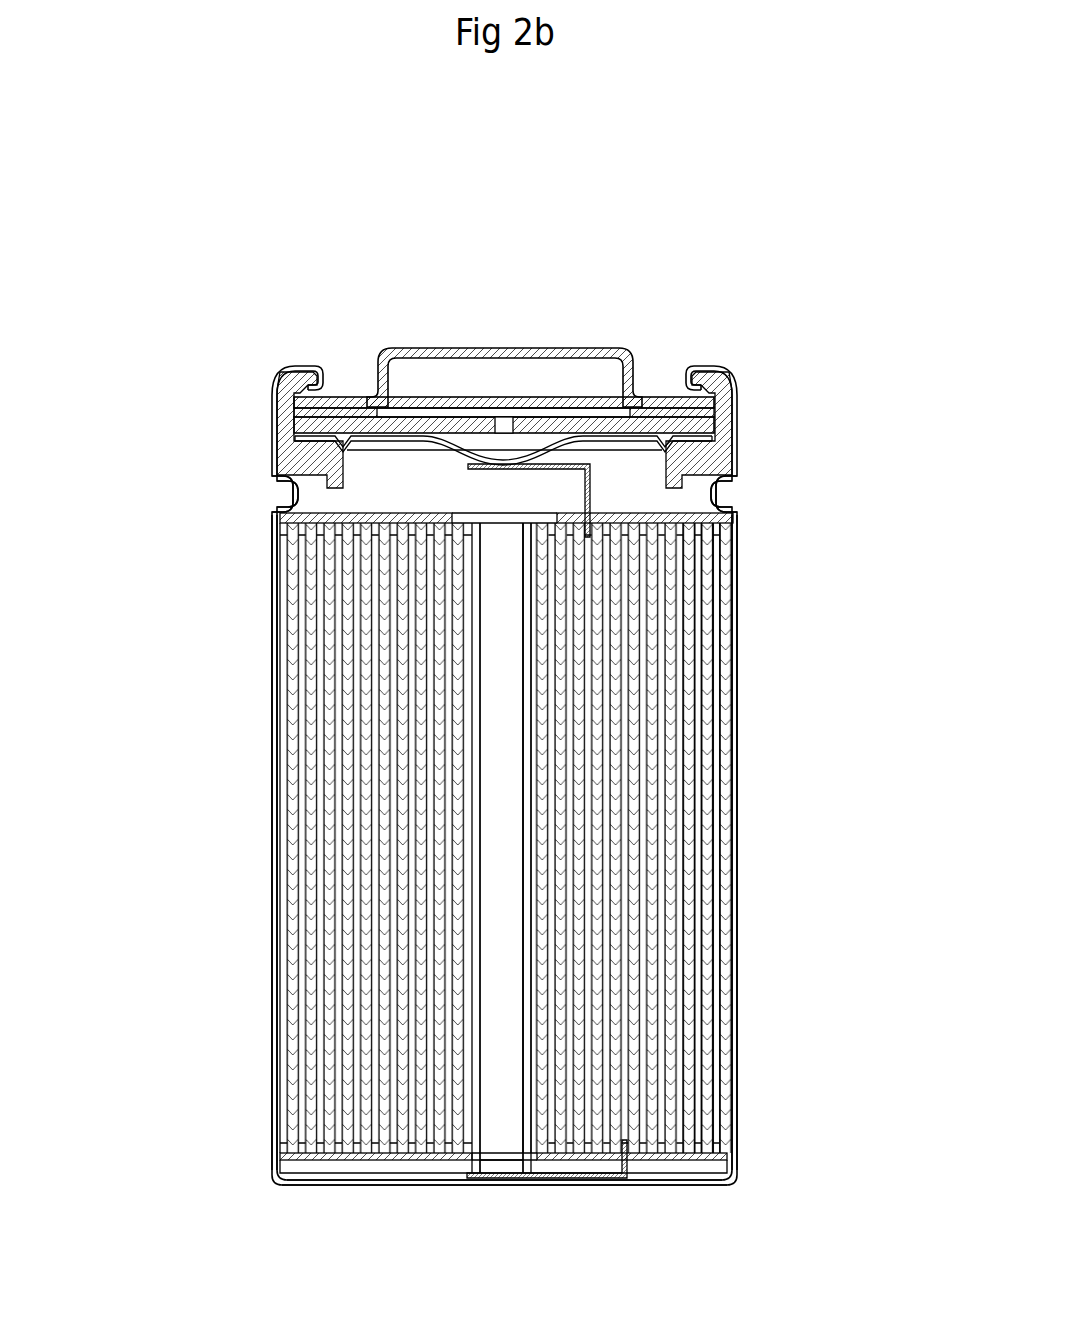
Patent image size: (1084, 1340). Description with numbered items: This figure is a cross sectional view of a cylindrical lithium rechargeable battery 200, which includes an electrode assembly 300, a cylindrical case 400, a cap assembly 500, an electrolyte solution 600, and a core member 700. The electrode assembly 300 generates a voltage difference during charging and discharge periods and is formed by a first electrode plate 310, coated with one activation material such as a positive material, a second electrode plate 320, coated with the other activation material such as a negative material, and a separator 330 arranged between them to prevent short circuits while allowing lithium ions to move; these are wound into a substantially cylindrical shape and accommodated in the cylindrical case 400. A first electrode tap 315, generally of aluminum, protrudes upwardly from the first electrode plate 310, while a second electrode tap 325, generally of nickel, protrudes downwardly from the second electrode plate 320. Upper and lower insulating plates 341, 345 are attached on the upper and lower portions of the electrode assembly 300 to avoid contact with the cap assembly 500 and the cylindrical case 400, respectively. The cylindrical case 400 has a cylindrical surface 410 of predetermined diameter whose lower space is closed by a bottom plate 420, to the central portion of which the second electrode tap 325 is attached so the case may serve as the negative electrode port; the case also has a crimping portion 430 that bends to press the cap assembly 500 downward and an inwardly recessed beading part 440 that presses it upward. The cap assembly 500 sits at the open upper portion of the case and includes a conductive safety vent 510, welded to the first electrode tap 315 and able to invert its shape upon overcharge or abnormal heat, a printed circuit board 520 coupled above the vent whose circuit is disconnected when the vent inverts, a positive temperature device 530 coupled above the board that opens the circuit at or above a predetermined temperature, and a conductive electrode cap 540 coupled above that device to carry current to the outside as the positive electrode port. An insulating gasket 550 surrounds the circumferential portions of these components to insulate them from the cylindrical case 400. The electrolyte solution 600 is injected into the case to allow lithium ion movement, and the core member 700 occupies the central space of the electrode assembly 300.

The cylindrical lithium rechargeable battery 200 is at (777, 320).
The electrode assembly 300 is at (875, 502).
The first electrode plate 310 is at (690, 676).
The first electrode tap 315 is at (590, 478).
The second electrode plate 320 is at (707, 578).
The second electrode tap 325 is at (637, 1180).
The separator 330 is at (697, 633).
The upper insulating plate 341 is at (695, 511).
The lower insulating plate 345 is at (713, 1157).
The cylindrical case 400 is at (122, 462).
The cylindrical surface 410 is at (273, 570).
The bottom plate 420 is at (303, 1187).
The crimping portion 430 is at (270, 373).
The beading part 440 is at (288, 490).
The cap assembly 500 is at (698, 248).
The conductive safety vent 510 is at (469, 452).
The printed circuit board 520 is at (540, 423).
The positive temperature device 530 is at (593, 412).
The conductive electrode cap 540 is at (406, 348).
The insulating gasket 550 is at (713, 397).
The electrolyte solution 600 is at (498, 1163).
The core member 700 is at (530, 1148).